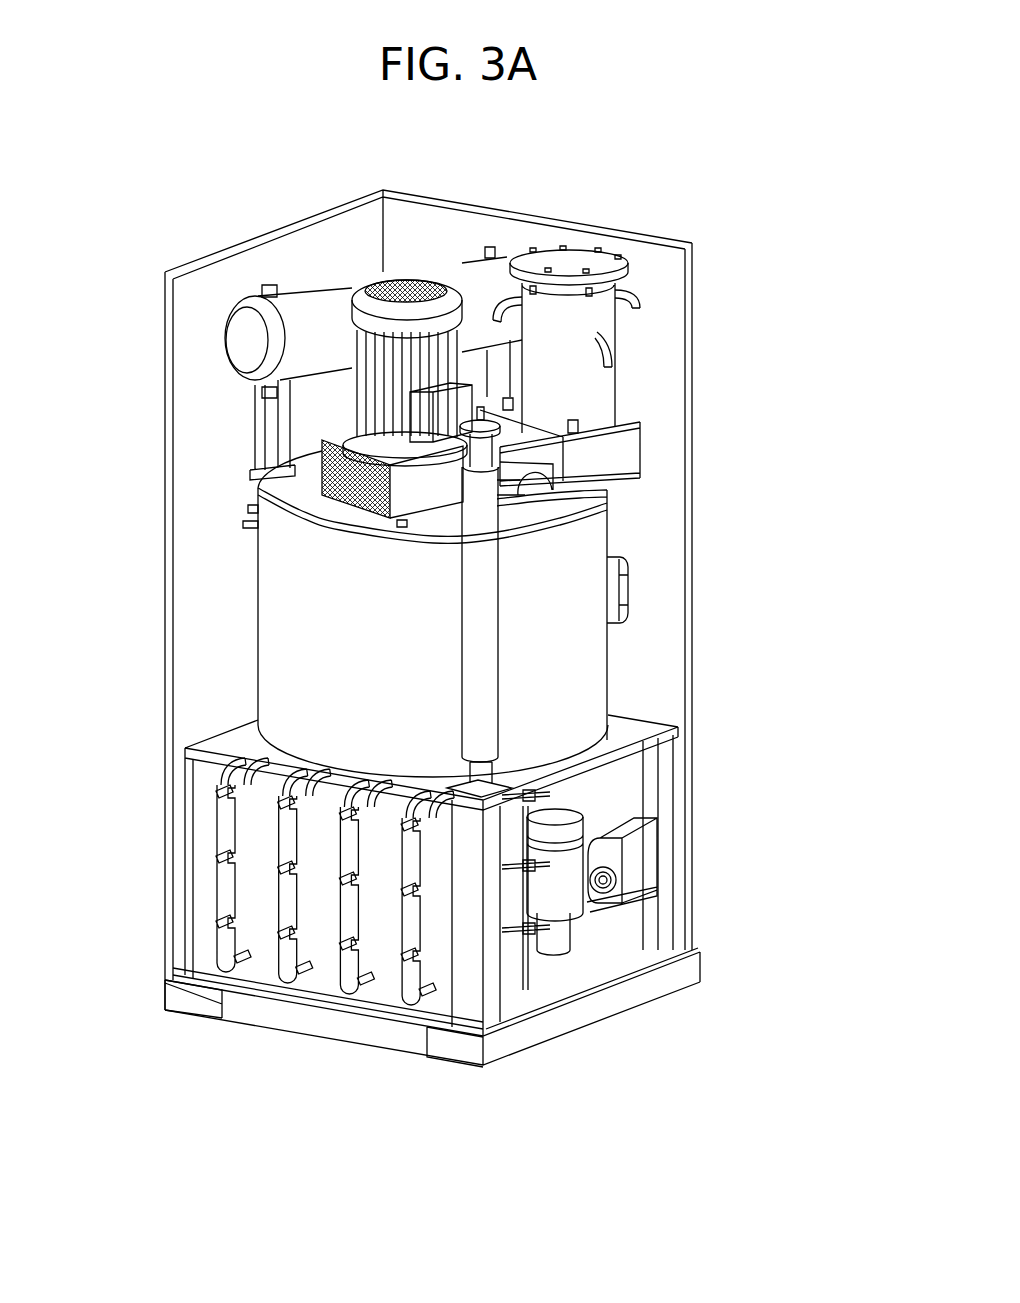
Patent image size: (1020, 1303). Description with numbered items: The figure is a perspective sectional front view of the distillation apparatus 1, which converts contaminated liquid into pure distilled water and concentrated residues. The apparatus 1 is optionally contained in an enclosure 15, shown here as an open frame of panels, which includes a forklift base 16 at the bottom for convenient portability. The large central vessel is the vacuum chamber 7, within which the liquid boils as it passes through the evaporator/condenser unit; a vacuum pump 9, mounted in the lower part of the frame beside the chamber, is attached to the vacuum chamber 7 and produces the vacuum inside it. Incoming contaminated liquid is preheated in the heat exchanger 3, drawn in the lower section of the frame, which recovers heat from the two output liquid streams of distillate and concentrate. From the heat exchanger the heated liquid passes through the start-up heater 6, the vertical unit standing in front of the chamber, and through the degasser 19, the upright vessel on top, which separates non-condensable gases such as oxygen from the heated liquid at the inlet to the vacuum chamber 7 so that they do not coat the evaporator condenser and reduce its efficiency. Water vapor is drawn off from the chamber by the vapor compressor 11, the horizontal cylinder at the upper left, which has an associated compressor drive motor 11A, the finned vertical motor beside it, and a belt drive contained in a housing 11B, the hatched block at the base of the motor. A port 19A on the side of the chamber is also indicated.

The distillation apparatus 1 is at (544, 183).
The heat exchanger 3 is at (283, 883).
The start-up heater 6 is at (488, 568).
The vacuum chamber 7 is at (318, 647).
The vacuum pump 9 is at (640, 860).
The vapor compressor 11 is at (233, 333).
The compressor drive motor 11A is at (362, 297).
The housing 11B is at (323, 503).
The enclosure 15 is at (665, 275).
The forklift base 16 is at (457, 1064).
The degasser 19 is at (572, 272).
The filter port 19A is at (632, 610).